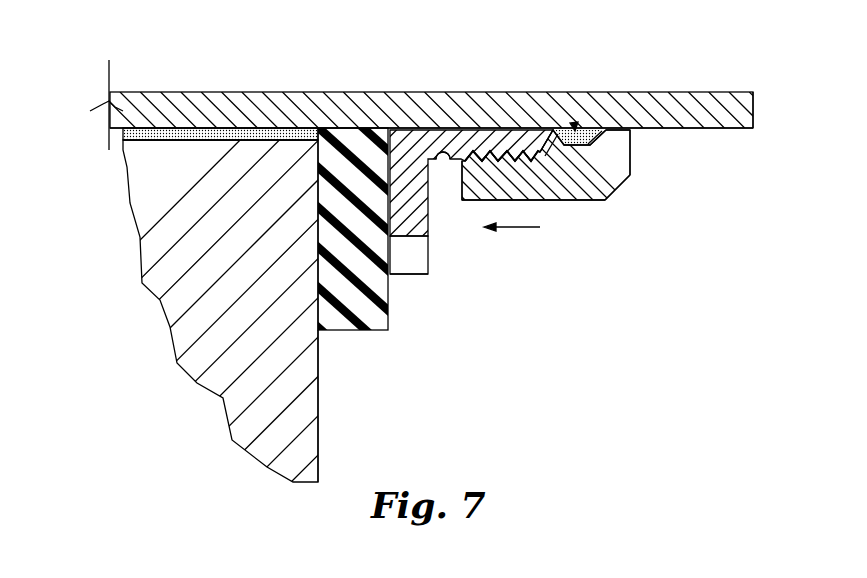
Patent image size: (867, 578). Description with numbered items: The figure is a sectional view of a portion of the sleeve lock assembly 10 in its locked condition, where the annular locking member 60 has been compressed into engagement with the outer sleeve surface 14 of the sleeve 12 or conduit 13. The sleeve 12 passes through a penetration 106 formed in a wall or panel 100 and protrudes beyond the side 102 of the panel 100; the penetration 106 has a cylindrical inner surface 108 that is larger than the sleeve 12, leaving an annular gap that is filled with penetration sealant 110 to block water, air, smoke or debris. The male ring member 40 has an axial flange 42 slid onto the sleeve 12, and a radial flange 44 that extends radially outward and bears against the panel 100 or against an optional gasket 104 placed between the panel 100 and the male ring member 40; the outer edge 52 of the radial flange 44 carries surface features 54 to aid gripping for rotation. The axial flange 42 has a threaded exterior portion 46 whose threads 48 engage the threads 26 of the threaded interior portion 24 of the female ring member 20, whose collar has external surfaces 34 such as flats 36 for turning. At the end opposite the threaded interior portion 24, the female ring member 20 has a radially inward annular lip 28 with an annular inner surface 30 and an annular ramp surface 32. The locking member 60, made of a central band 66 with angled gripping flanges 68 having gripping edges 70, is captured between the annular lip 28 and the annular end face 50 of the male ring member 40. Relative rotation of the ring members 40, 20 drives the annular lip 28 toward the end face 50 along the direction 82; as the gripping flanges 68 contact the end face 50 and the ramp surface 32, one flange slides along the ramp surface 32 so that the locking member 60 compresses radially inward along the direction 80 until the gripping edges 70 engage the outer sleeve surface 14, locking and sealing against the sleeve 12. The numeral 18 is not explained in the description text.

The sleeve lock assembly 10 is at (615, 340).
The sleeve 12 is at (437, 95).
The conduit 13 is at (707, 93).
The outer sleeve surface 14 is at (190, 127).
The panel edge 18 is at (748, 110).
The female ring member 20 is at (594, 201).
The threaded interior portion 24 is at (501, 109).
The threads 26 is at (498, 156).
The annular lip 28 is at (622, 140).
The annular inner surface 30 is at (618, 170).
The annular ramp surface 32 is at (612, 148).
The external surfaces 34 is at (475, 200).
The flats 36 is at (568, 201).
The male ring member 40 is at (403, 140).
The axial flange 42 is at (473, 149).
The radial flange 44 is at (429, 226).
The threaded exterior portion 46 is at (429, 108).
The threads 48 is at (441, 156).
The annular end face 50 is at (546, 134).
The outer edge 52 is at (418, 305).
The surface features 54 is at (413, 275).
The annular locking member 60 is at (612, 142).
The central band 66 is at (580, 137).
The gripping flanges 68 is at (613, 90).
The gripping edge 70 is at (595, 142).
The direction 80 is at (573, 125).
The direction 82 is at (526, 229).
The panel 100 is at (172, 292).
The side 102 is at (319, 405).
The gasket 104 is at (353, 331).
The penetration 106 is at (174, 176).
The inner surface 108 is at (157, 180).
The penetration sealant 110 is at (153, 147).